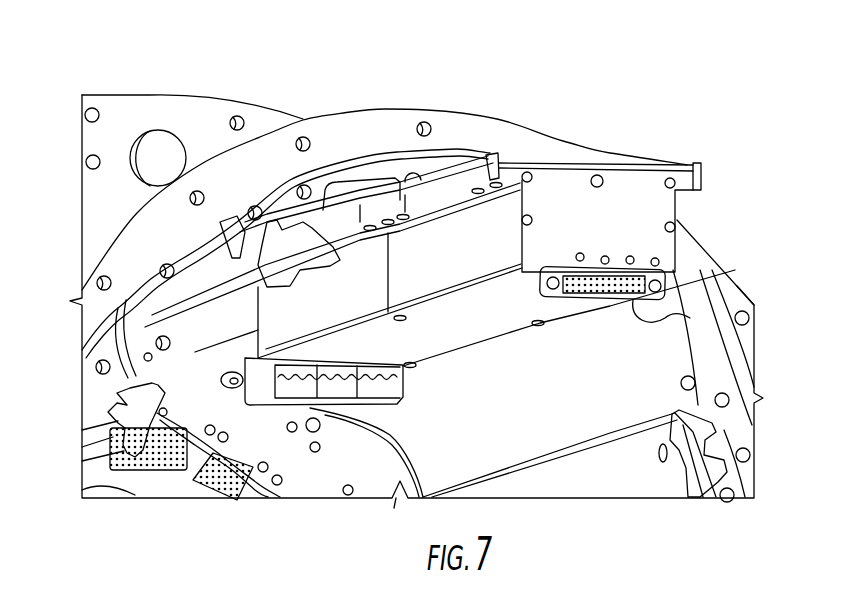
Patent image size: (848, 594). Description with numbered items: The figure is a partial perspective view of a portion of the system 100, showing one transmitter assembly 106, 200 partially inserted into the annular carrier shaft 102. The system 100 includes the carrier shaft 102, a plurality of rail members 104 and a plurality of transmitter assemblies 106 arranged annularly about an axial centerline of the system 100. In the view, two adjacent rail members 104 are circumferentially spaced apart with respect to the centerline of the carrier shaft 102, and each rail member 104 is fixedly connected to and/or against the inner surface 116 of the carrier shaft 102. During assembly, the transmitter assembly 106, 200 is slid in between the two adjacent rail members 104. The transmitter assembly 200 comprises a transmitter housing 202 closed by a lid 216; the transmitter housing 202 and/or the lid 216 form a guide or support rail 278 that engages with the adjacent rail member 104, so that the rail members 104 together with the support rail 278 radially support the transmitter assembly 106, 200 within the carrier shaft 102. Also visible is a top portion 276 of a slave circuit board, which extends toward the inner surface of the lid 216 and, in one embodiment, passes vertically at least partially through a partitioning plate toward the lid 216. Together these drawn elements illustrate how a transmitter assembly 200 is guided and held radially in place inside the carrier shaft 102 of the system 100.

The system 100 is at (268, 100).
The carrier shaft 102 is at (523, 103).
The rail member 104 is at (290, 257).
The transmitter assembly 106 is at (640, 215).
The inner surface of the carrier shaft 116 is at (613, 380).
The transmitter assembly 200 is at (658, 170).
The transmitter housing 202 is at (465, 262).
The lid 216 is at (600, 150).
The top portion of the slave circuit board 276 is at (487, 170).
The support rail 278 is at (703, 190).